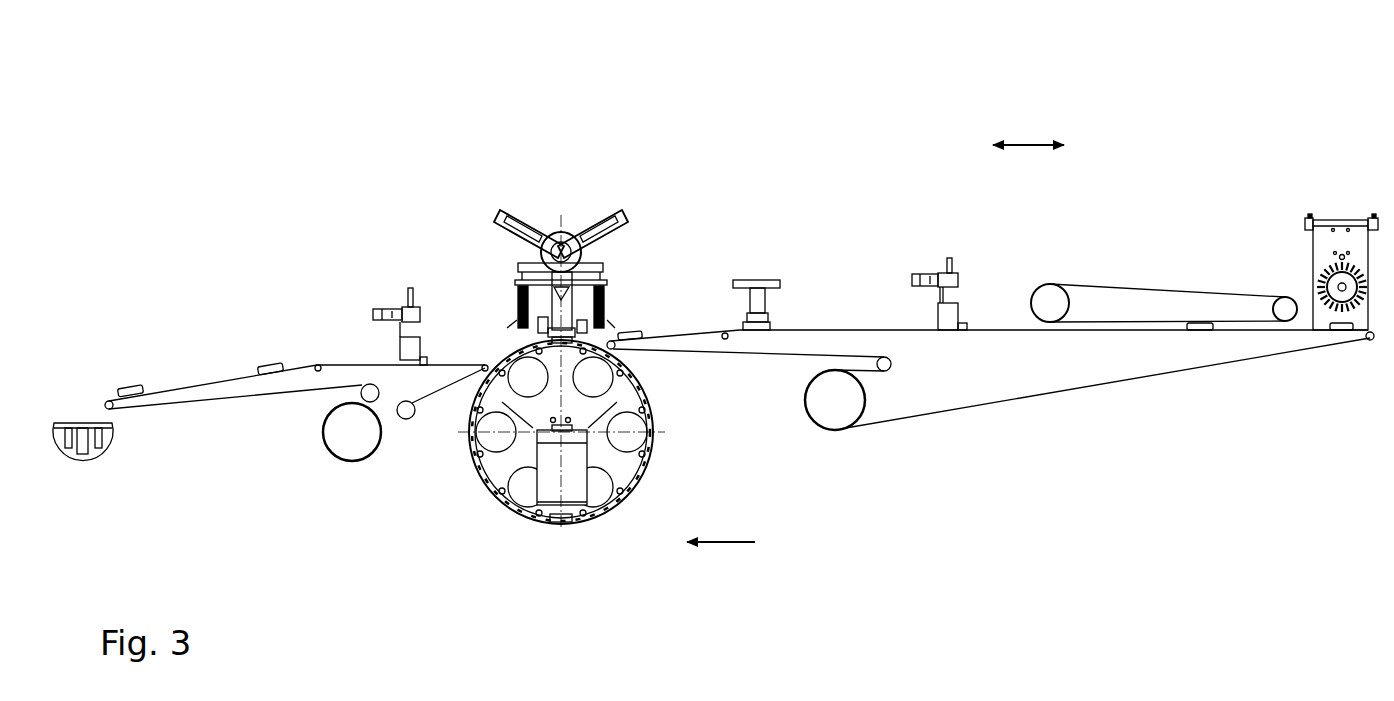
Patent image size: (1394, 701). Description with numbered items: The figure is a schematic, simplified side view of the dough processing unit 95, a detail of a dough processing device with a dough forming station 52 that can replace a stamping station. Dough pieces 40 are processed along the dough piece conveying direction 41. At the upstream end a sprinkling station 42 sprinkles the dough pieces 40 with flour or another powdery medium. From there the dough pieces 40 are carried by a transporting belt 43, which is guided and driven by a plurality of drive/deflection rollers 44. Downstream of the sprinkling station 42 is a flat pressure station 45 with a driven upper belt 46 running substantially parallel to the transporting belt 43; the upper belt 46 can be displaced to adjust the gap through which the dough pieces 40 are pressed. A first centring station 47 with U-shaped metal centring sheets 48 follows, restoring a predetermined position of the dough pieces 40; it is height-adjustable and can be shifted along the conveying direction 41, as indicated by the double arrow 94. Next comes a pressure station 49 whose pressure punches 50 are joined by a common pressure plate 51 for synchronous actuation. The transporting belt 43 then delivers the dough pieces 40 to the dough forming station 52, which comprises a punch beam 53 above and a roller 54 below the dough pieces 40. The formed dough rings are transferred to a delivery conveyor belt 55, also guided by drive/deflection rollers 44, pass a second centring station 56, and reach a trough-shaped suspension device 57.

The dough pieces 40 is at (131, 388).
The dough piece conveying direction 41 is at (750, 543).
The sprinkling station 42 is at (1343, 217).
The transporting belt 43 is at (1078, 390).
The drive/deflection rollers 44 is at (108, 400).
The flat pressure station 45 is at (1164, 249).
The upper belt 46 is at (1132, 285).
The first centring station 47 is at (935, 253).
The metal centring sheets 48 is at (937, 317).
The pressure station 49 is at (769, 253).
The pressure punches 50 is at (760, 307).
The pressure plate 51 is at (747, 283).
The dough forming station 52 is at (487, 329).
The punch beam 53 is at (555, 216).
The roller 54 is at (597, 533).
The delivery conveyor belt 55 is at (257, 397).
The second centring station 56 is at (397, 291).
The suspension device 57 is at (83, 458).
The double arrow 94 is at (1030, 143).
The dough processing unit 95 is at (748, 152).